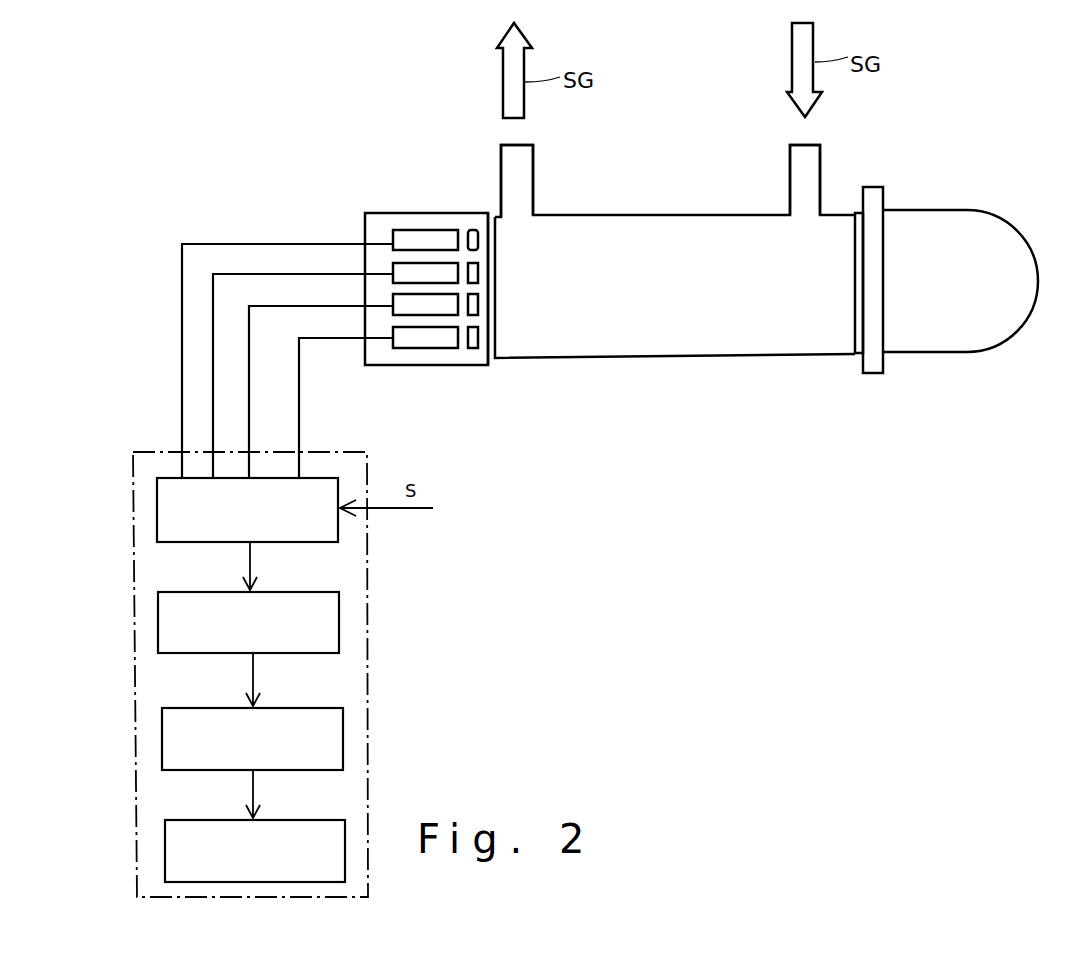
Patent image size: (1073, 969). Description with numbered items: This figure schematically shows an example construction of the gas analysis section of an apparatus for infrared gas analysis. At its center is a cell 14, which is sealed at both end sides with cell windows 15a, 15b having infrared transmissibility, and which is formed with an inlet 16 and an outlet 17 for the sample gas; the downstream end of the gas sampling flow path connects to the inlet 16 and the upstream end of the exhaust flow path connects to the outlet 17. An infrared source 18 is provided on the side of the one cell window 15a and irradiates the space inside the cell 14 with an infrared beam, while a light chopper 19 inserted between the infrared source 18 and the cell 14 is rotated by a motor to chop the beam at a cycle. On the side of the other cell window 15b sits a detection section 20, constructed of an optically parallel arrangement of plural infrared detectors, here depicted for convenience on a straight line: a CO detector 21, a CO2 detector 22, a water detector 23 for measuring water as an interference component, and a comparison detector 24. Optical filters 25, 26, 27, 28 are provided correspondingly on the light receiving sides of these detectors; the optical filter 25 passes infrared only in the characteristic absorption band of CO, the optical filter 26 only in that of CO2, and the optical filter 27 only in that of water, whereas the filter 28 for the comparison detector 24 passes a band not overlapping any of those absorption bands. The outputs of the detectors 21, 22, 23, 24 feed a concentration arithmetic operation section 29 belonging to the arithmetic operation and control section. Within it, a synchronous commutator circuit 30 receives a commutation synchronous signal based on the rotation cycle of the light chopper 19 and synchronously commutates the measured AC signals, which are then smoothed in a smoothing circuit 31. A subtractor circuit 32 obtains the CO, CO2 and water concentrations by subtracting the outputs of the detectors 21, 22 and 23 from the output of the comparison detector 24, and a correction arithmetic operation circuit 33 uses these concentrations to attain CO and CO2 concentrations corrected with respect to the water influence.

The cell 14 is at (648, 213).
The cell window 15a is at (857, 312).
The cell window 15b is at (495, 343).
The inlet 16 is at (788, 167).
The outlet 17 is at (533, 167).
The infrared source 18 is at (1012, 338).
The light chopper 19 is at (875, 375).
The detection section 20 is at (376, 196).
The CO detector 21 is at (424, 228).
The CO2 detector 22 is at (392, 272).
The water detector 23 is at (392, 305).
The comparison detector 24 is at (416, 352).
The optical filter 25 is at (472, 228).
The optical filter 26 is at (480, 272).
The optical filter 27 is at (480, 303).
The optical filter 28 is at (475, 350).
The concentration arithmetic operation section 29 is at (131, 555).
The synchronous commutator circuit 30 is at (157, 508).
The smoothing circuit 31 is at (157, 620).
The subtractor circuit 32 is at (162, 735).
The correction arithmetic operation circuit 33 is at (165, 852).